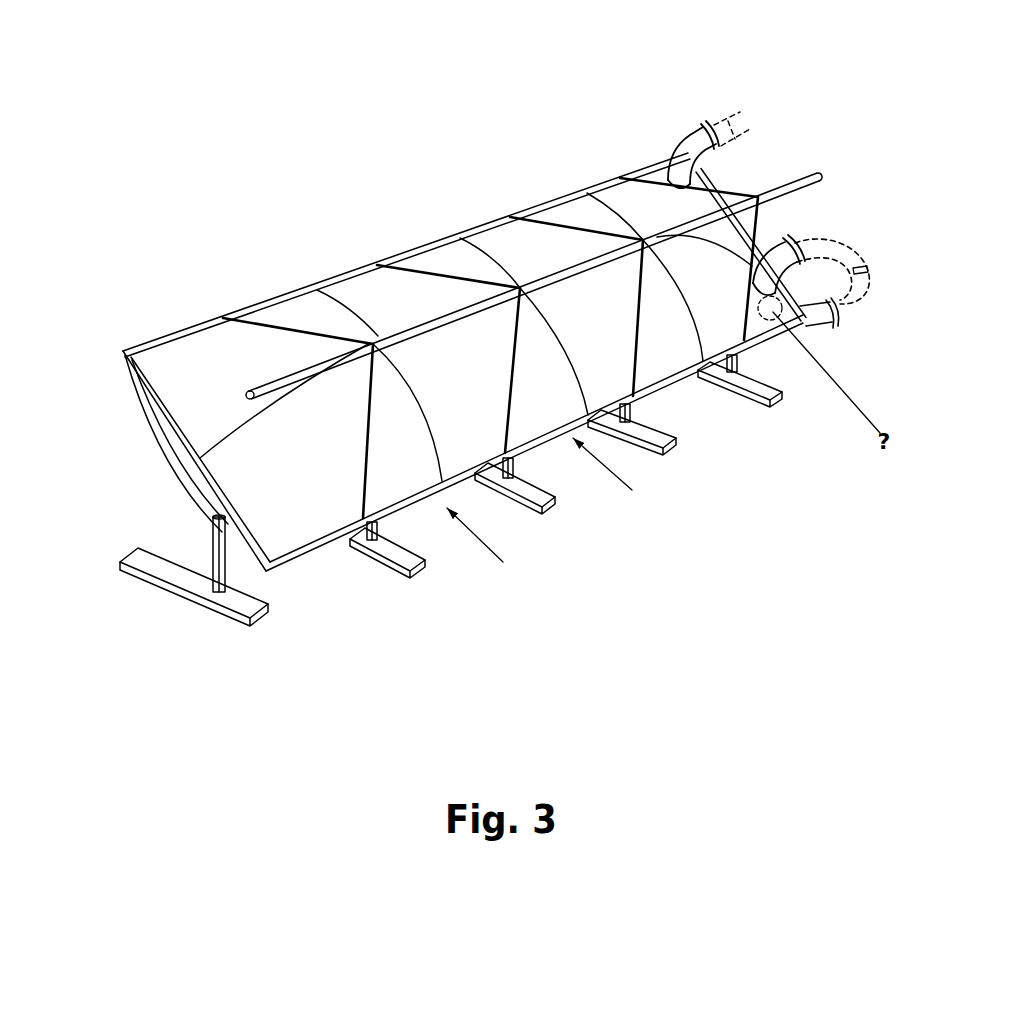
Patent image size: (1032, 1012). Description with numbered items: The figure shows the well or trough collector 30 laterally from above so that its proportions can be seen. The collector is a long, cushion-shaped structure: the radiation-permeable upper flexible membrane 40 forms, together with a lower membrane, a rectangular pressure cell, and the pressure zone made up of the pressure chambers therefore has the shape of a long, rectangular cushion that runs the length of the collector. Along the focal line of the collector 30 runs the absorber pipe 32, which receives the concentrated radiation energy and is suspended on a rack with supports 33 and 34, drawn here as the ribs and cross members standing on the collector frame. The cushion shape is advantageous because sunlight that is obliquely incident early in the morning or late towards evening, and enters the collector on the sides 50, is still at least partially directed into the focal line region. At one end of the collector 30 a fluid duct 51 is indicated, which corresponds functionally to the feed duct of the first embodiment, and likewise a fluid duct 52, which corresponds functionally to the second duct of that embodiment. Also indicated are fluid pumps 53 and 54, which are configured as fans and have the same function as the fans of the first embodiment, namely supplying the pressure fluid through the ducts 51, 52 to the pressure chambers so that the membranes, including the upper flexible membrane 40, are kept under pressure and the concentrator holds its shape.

The trough collector 30 is at (316, 108).
The absorber pipe 32 is at (821, 176).
The support 33 is at (363, 518).
The support 34 is at (580, 228).
The upper flexible membrane 40 is at (378, 297).
The sides 50 is at (127, 428).
The fluid duct 51 is at (693, 150).
The fluid duct 52 is at (788, 250).
The fluid pump 53 is at (762, 168).
The fluid pump 54 is at (866, 276).